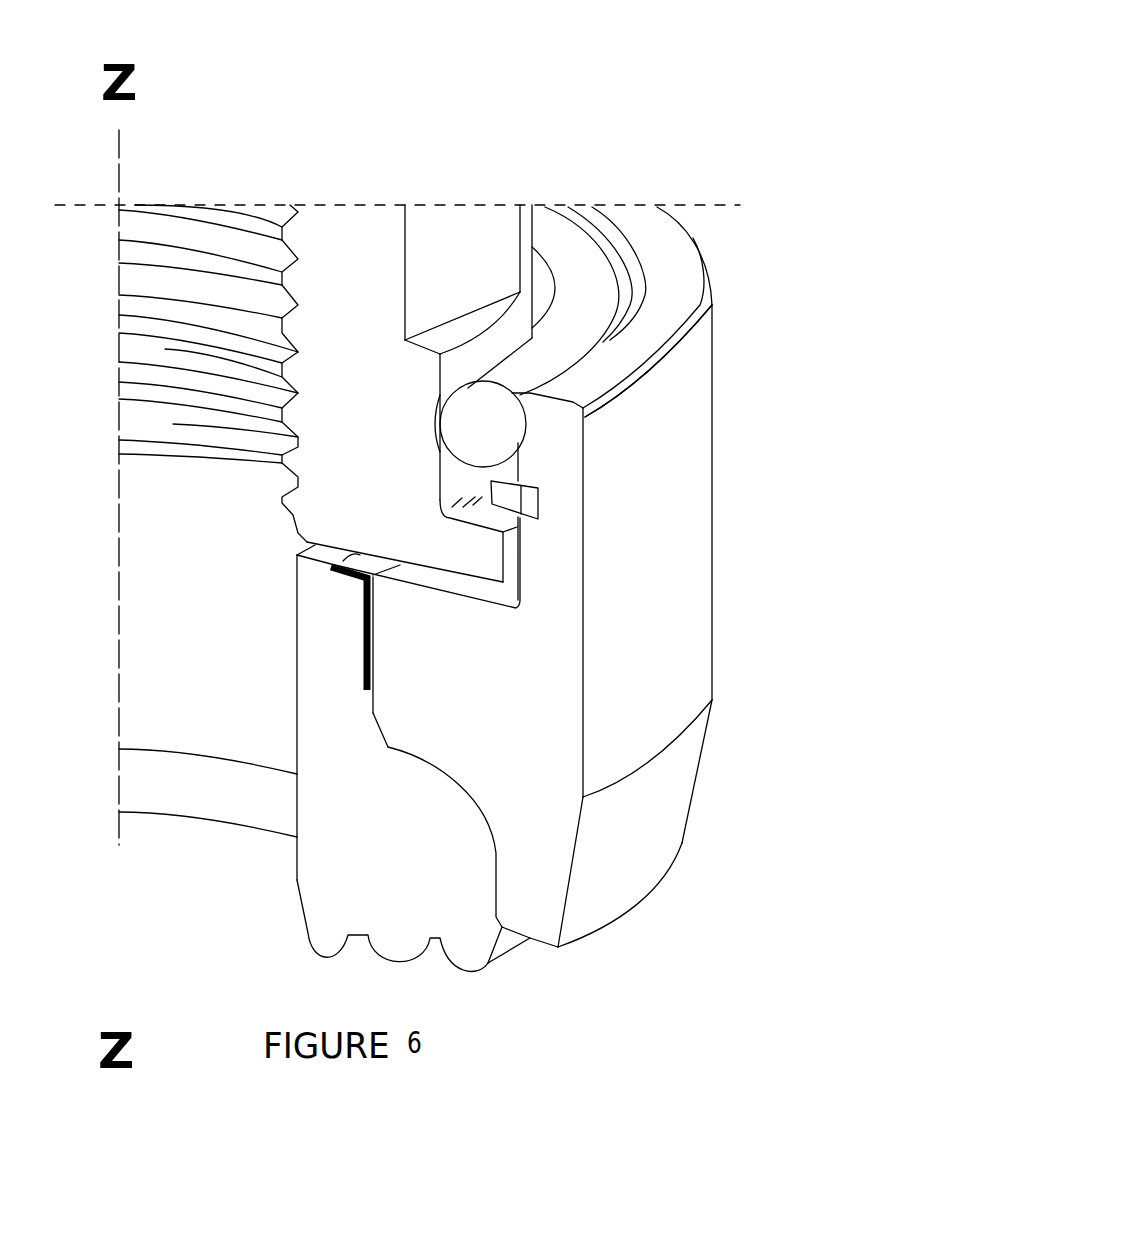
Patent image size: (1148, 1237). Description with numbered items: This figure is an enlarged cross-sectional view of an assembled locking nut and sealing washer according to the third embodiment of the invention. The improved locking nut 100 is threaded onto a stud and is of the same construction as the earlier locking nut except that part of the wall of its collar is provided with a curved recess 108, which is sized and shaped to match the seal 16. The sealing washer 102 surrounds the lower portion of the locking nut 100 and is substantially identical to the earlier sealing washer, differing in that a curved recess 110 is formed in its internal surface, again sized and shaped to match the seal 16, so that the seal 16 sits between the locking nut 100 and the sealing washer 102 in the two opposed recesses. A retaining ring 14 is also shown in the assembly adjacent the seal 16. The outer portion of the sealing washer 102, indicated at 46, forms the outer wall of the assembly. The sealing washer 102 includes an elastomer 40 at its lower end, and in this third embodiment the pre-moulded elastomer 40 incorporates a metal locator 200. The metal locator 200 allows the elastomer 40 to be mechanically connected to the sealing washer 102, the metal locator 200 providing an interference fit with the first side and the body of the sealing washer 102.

The improved locking nut 100 is at (458, 245).
The sealing washer 102 is at (750, 331).
The curved recess 108 is at (440, 412).
The seal 16 is at (475, 412).
The retaining ring 14 is at (538, 493).
The curved recess 110 is at (522, 423).
The outer sleeve 46 is at (688, 490).
The metal locator 200 is at (372, 633).
The elastomer 40 is at (435, 850).